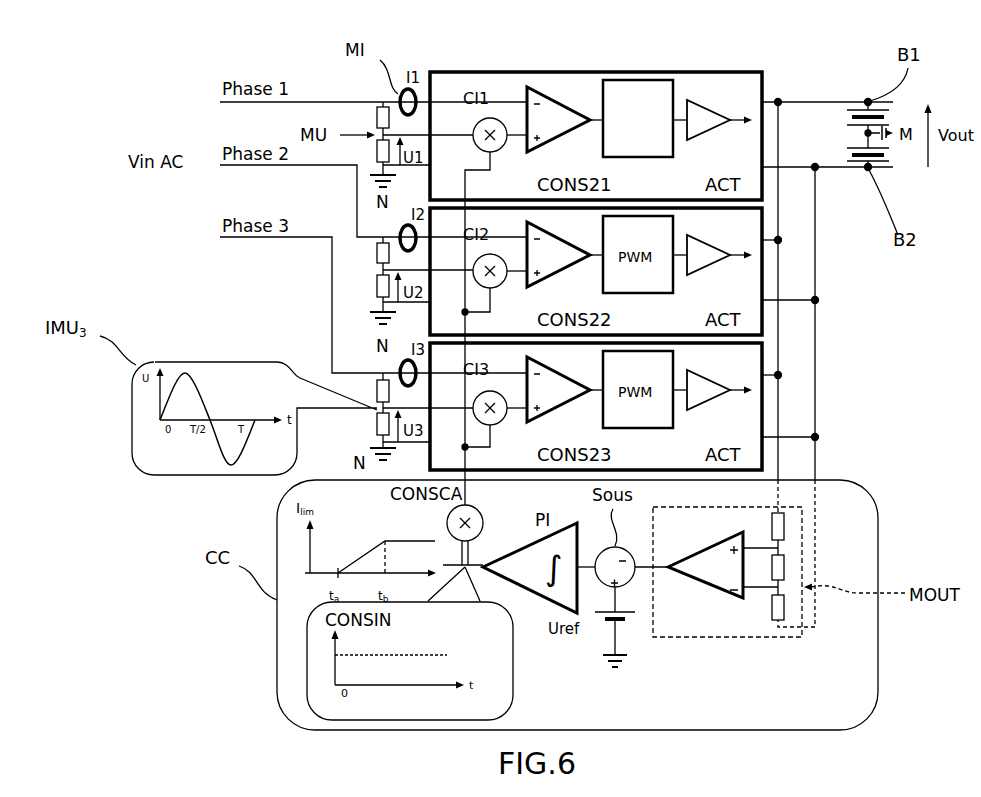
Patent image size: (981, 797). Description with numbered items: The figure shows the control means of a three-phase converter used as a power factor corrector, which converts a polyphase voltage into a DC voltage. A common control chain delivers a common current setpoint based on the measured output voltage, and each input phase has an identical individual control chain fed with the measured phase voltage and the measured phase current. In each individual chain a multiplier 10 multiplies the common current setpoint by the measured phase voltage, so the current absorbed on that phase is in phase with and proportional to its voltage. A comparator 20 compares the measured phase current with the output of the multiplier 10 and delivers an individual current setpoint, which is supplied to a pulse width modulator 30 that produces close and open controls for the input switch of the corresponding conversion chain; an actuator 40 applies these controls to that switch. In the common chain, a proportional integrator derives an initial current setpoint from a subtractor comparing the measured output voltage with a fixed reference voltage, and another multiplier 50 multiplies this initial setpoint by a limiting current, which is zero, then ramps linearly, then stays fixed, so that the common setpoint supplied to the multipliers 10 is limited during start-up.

The multiplier 10 is at (473, 124).
The comparator 20 is at (550, 92).
The pulse width modulator 30 is at (650, 80).
The actuator 40 is at (704, 115).
The multiplier 50 is at (482, 511).